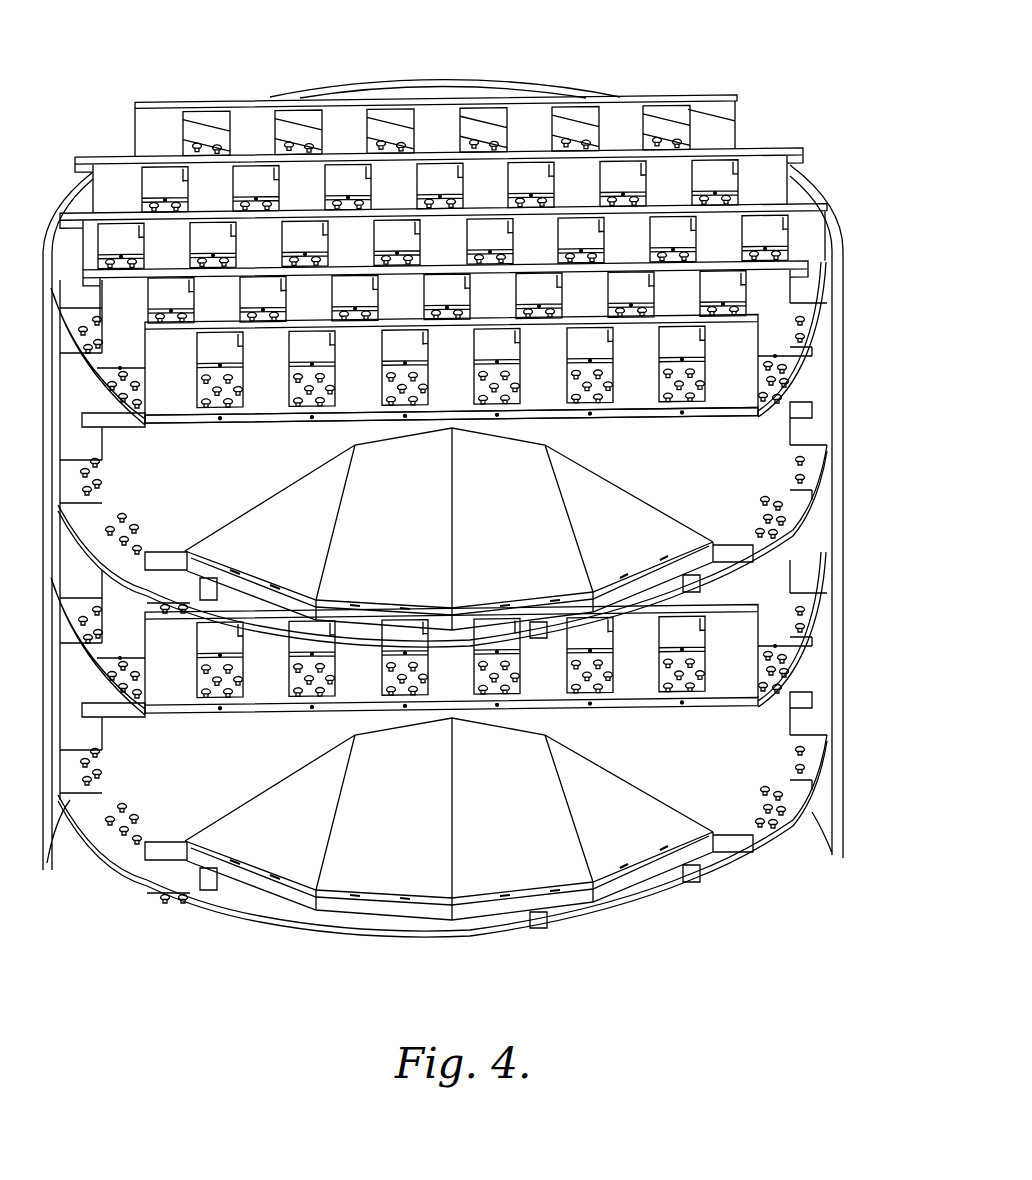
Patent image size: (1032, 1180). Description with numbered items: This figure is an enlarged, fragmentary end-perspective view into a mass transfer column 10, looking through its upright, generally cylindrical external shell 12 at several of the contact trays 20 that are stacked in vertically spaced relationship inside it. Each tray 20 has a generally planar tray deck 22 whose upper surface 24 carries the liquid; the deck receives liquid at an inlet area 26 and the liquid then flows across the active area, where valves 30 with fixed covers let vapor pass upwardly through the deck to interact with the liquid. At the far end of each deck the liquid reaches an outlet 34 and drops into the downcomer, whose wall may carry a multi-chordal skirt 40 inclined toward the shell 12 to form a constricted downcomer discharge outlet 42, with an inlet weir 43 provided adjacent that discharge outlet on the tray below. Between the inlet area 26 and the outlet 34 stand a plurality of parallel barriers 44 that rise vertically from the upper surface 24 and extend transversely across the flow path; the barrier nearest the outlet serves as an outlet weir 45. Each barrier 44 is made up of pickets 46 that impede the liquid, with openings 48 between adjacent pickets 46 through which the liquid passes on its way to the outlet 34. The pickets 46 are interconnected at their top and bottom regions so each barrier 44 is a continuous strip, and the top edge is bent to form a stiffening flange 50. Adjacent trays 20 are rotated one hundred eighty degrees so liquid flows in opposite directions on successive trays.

The mass transfer column 10 is at (838, 648).
The external shell 12 is at (820, 812).
The contact trays 20 is at (797, 366).
The tray deck 22 is at (815, 462).
The upper surface 24 is at (813, 472).
The inlet area 26 is at (238, 600).
The valve 30 is at (122, 825).
The outlet 34 is at (183, 441).
The multi-chordal skirt 40 is at (410, 553).
The downcomer discharge outlet 42 is at (527, 598).
The inlet weir 43 is at (627, 593).
The barriers 44 is at (740, 115).
The outlet weir 45 is at (752, 340).
The pickets 46 is at (625, 118).
The openings 48 is at (580, 113).
The stiffening flange 50 is at (806, 262).